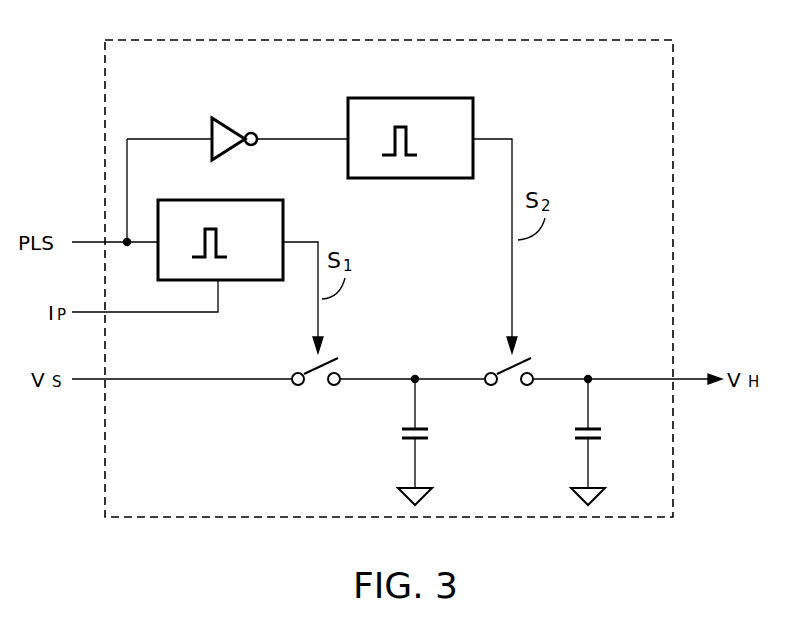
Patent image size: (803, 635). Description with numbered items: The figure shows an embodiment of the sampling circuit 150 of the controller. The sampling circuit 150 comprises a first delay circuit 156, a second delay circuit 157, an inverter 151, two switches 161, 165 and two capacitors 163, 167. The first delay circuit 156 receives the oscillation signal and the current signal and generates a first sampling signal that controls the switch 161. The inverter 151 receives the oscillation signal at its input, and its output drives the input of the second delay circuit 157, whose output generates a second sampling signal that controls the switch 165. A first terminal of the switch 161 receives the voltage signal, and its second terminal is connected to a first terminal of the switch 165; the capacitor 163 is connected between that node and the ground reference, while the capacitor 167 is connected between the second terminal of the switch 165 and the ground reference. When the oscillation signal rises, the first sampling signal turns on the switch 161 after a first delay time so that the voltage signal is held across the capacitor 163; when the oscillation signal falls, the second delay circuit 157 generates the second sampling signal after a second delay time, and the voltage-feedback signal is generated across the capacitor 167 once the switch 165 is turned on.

The sampling circuit 150 is at (615, 40).
The inverter 151 is at (231, 128).
The first delay circuit 156 is at (253, 200).
The second delay circuit 157 is at (404, 93).
The switch 161 is at (318, 393).
The capacitor 163 is at (433, 437).
The switch 165 is at (497, 360).
The capacitor 167 is at (606, 437).